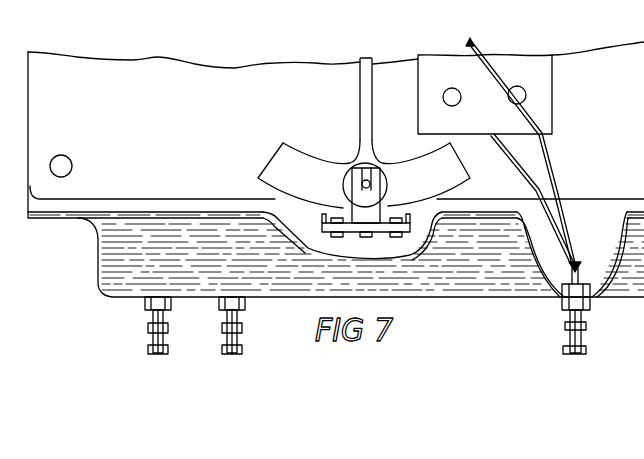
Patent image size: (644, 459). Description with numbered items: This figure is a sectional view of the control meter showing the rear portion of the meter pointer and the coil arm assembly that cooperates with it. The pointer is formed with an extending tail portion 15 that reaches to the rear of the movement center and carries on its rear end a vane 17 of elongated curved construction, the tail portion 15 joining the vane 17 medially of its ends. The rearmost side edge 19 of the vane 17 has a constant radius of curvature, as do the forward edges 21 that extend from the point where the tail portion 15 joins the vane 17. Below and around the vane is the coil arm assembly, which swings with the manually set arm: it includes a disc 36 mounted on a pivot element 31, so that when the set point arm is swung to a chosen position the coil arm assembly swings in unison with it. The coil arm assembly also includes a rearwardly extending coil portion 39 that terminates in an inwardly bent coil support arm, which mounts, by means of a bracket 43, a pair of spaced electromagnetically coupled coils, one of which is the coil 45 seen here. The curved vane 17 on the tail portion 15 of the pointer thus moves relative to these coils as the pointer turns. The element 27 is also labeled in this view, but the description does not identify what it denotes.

The tail portion 15 is at (373, 90).
The vane 17 is at (456, 164).
The rearmost side edge 19 is at (338, 207).
The forward edges 21 is at (296, 158).
The body plate 27 is at (322, 129).
The pivot element 31 is at (618, 5).
The disc 36 is at (322, 170).
The coil portion 39 is at (36, 164).
The bracket 43 is at (409, 226).
The coil 45 is at (383, 184).